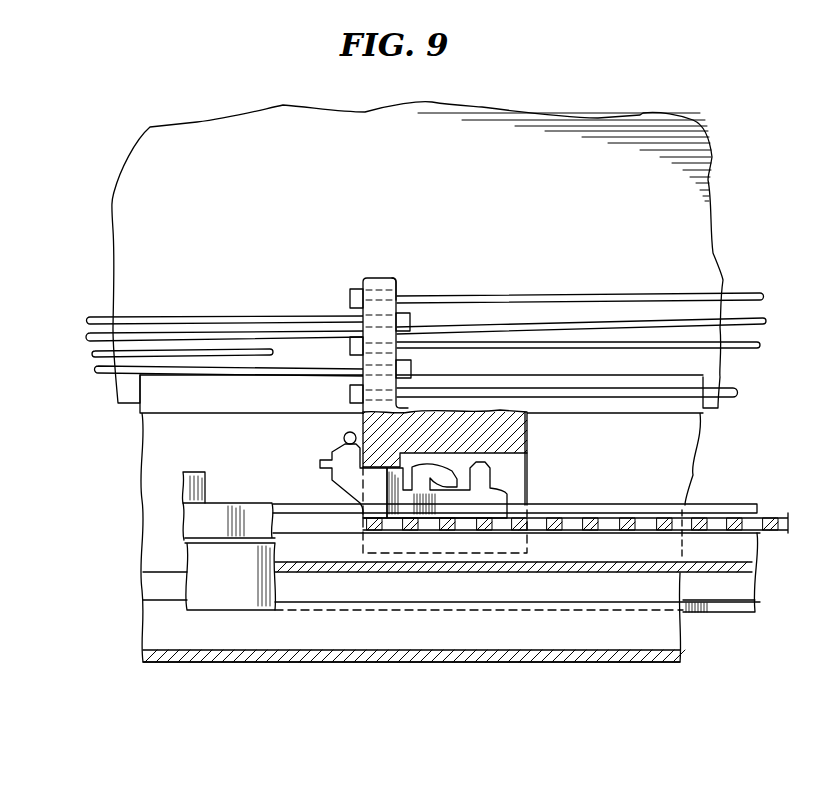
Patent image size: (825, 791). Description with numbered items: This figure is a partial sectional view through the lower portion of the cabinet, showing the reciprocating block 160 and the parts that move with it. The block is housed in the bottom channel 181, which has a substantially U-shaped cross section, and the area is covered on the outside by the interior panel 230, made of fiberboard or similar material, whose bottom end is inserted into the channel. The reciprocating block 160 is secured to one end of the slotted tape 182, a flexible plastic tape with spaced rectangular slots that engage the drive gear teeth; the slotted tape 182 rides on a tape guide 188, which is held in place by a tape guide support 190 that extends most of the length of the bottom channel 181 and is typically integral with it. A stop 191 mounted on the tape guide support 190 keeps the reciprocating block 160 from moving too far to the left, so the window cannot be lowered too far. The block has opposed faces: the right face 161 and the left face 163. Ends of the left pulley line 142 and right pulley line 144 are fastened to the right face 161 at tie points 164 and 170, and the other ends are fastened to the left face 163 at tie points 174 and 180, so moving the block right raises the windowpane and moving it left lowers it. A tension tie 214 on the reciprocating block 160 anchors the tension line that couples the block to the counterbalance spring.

The interior panel 230 is at (197, 127).
The reciprocating block 160 is at (380, 278).
The tie point 174 is at (352, 293).
The right face 161 is at (399, 290).
The tie point 164 is at (410, 318).
The left face 163 is at (352, 312).
The tie point 180 is at (350, 345).
The tie point 170 is at (411, 368).
The tension tie 214 is at (350, 393).
The left pulley line 142 is at (602, 323).
The right pulley line 144 is at (98, 370).
The stop 191 is at (193, 472).
The tape guide 188 is at (198, 520).
The tape guide support 190 is at (157, 590).
The slotted tape 182 is at (770, 513).
The bottom channel 181 is at (610, 660).